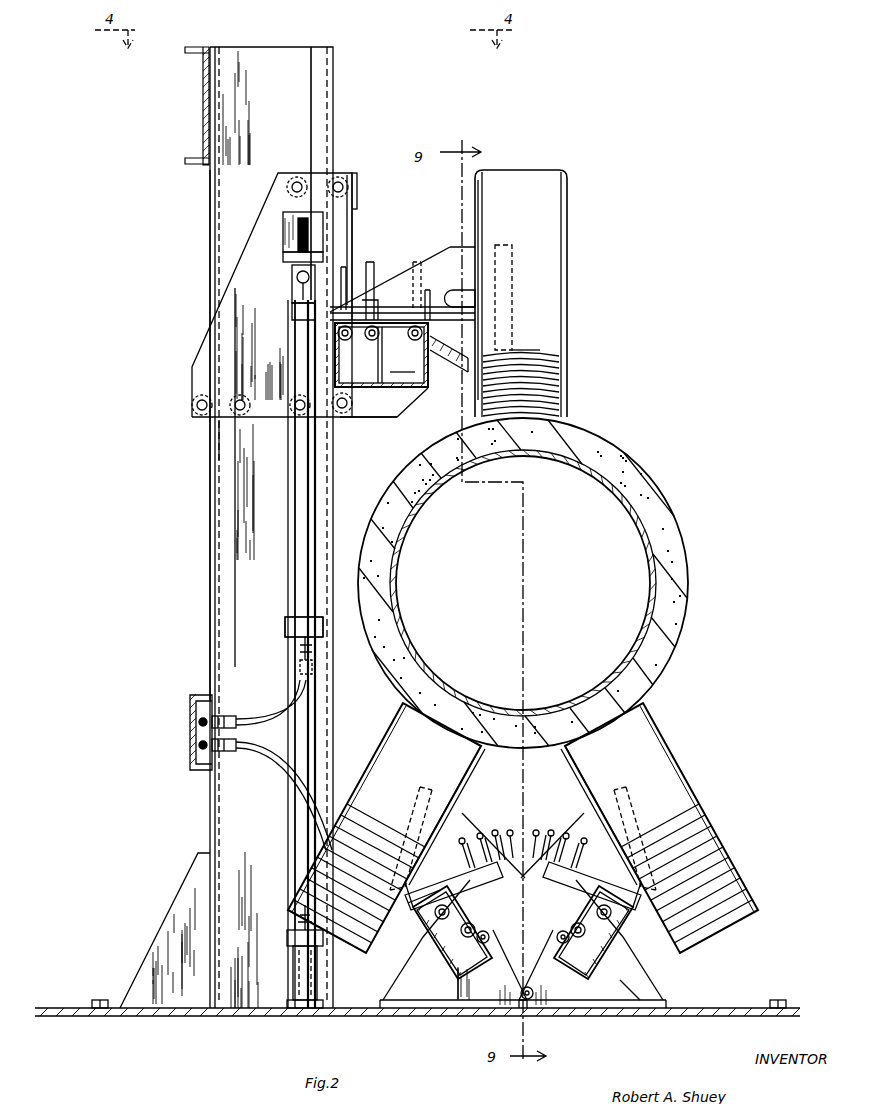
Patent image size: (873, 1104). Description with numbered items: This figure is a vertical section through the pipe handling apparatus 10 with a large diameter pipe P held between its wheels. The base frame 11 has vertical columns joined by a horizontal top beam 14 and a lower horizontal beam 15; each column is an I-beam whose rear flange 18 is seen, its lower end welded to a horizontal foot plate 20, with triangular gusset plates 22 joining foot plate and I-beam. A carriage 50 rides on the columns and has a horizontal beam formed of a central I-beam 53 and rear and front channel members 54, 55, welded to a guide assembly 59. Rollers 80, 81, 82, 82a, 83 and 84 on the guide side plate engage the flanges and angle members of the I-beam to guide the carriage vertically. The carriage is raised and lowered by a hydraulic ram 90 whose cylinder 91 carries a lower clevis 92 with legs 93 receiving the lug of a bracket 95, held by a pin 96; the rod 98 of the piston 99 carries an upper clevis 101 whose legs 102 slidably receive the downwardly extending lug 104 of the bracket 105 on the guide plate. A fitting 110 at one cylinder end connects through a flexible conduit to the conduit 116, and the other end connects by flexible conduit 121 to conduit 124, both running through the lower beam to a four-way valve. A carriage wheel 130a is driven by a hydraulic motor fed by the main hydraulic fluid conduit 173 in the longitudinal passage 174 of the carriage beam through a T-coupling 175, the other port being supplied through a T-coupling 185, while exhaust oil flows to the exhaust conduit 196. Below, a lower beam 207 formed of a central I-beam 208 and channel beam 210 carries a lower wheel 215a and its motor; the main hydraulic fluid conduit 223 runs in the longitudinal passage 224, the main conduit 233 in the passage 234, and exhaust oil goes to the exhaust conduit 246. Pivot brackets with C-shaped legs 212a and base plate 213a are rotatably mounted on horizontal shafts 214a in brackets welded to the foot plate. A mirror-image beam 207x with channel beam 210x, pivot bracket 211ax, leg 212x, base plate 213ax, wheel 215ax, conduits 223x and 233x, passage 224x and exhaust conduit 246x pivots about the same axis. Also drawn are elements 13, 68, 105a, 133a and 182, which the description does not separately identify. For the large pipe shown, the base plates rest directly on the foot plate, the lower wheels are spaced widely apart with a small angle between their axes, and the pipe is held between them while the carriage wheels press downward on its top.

The pipe handling apparatus 10 is at (578, 228).
The base frame 11 is at (200, 513).
The hose 13 is at (292, 700).
The horizontal top beam 14 is at (198, 60).
The lower horizontal beam 15 is at (188, 712).
The rear flange 18 is at (210, 232).
The horizontal foot plate 20 is at (92, 1005).
The gusset plates 22 is at (140, 970).
The carriage 50 is at (366, 240).
The central I-beam 53 is at (380, 368).
The rear channel member 54 is at (340, 350).
The front channel member 55 is at (430, 388).
The guide assembly 59 is at (200, 444).
The tab 68 is at (357, 196).
The roller 80 is at (344, 178).
The roller 81 is at (352, 420).
The roller 82 is at (293, 178).
The roller 82a is at (336, 405).
The roller 83 is at (198, 400).
The roller 84 is at (248, 396).
The hydraulic ram 90 is at (282, 612).
The cylinder 91 is at (296, 795).
The clevis 92 is at (288, 932).
The legs 93 is at (290, 948).
The bracket 95 is at (293, 990).
The pin 96 is at (300, 1014).
The rod 98 is at (297, 516).
The piston 99 is at (300, 672).
The clevis 101 is at (284, 294).
The legs 102 is at (296, 278).
The downwardly extending lug 104 is at (285, 258).
The bracket 105 is at (296, 300).
The cylinder 105a is at (290, 222).
The fitting 110 is at (285, 627).
The conduit 116 is at (200, 722).
The flexible conduit 121 is at (300, 770).
The conduit 124 is at (200, 746).
The wheel 130a is at (560, 382).
The lever 133a is at (450, 245).
The main hydraulic fluid conduit 173 is at (420, 300).
The longitudinal passage 174 is at (404, 365).
The T-coupling 175 is at (440, 306).
The roller 182 is at (378, 338).
The T-coupling 185 is at (390, 322).
The exhaust conduit 196 is at (340, 335).
The beam 207 is at (398, 955).
The beam 207x is at (655, 955).
The central I-beam 208 is at (414, 935).
The channel beam 210 is at (505, 985).
The channel beam 210x is at (585, 980).
The pivot bracket 211ax is at (670, 986).
The C-shaped leg 212a is at (430, 1008).
The C-shaped leg 212x is at (626, 1008).
The base plate 213a is at (385, 1002).
The base plate 213ax is at (668, 1001).
The horizontal shaft 214a is at (530, 1000).
The lower wheel 215a is at (452, 776).
The lower wheel 215ax is at (658, 728).
The main hydraulic fluid conduit 223 is at (466, 938).
The main hydraulic fluid conduit 223x is at (594, 936).
The longitudinal passage 224 is at (458, 975).
The longitudinal passage 224x is at (618, 952).
The main conduit 233 is at (400, 866).
The main conduit 233x is at (585, 862).
The passage 234 is at (426, 950).
The exhaust conduit 246 is at (488, 918).
The exhaust conduit 246x is at (566, 940).
The pipe P is at (688, 548).